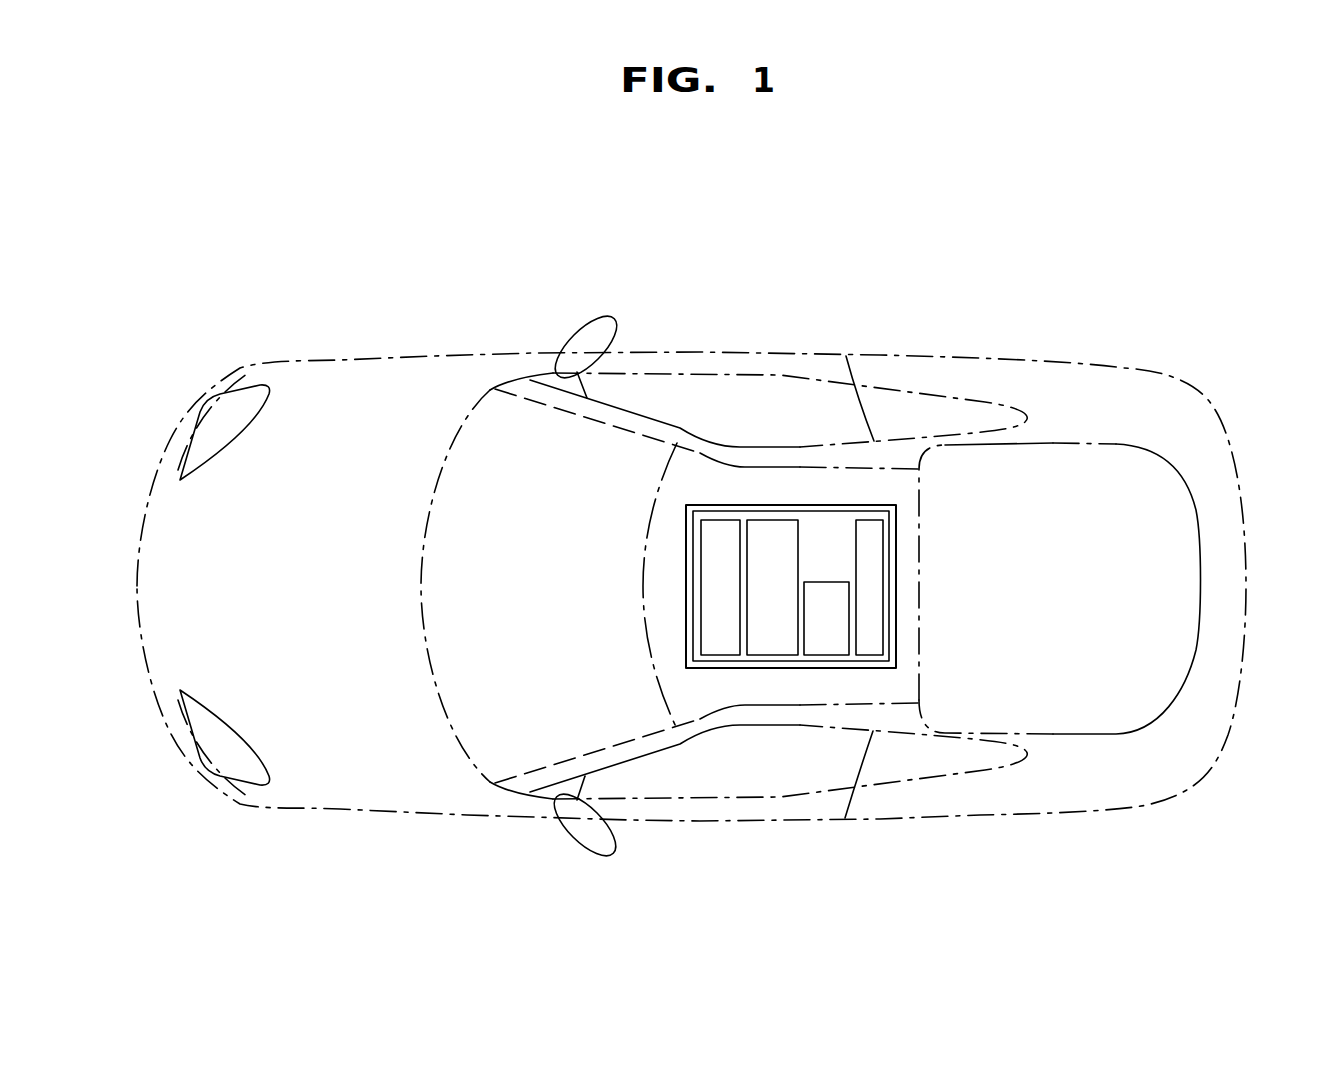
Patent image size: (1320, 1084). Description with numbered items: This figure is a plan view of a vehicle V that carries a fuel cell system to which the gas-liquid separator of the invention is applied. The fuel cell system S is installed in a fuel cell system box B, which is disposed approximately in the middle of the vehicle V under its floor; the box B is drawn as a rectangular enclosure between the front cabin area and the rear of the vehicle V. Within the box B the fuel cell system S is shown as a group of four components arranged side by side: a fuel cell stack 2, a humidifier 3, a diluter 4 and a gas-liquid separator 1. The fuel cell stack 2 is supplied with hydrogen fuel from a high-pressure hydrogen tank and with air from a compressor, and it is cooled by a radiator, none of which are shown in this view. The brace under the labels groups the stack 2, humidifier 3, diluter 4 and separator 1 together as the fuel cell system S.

The vehicle V is at (837, 303).
The fuel cell system box B is at (796, 491).
The fuel cell system S is at (815, 731).
The gas-liquid separator 1 is at (826, 645).
The fuel cell stack 2 is at (773, 645).
The humidifier 3 is at (720, 645).
The diluter 4 is at (867, 645).